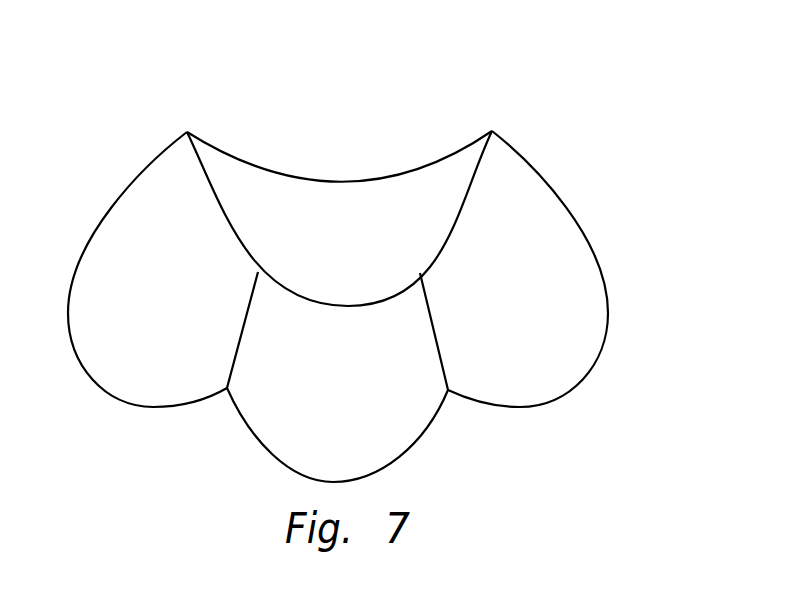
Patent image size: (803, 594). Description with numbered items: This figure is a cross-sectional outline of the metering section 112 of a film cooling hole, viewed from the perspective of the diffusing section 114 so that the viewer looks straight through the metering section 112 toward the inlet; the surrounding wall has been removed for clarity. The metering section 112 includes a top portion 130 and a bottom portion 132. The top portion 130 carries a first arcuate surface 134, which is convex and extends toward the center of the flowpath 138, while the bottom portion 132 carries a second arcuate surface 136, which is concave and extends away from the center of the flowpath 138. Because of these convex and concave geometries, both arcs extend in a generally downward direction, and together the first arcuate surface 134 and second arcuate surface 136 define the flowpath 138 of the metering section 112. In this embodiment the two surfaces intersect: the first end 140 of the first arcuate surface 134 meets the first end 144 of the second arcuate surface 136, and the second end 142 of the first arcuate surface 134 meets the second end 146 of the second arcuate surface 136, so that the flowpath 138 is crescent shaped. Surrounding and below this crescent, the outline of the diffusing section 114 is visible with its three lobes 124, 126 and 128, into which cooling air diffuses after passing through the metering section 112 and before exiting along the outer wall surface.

The metering section 112 is at (243, 187).
The diffusing section 114 is at (532, 207).
The lobe 124 is at (535, 364).
The lobe 126 is at (355, 427).
The lobe 128 is at (158, 354).
The top portion 130 is at (412, 166).
The bottom portion 132 is at (429, 271).
The first arcuate surface 134 is at (362, 180).
The second arcuate surface 136 is at (352, 303).
The flowpath 138 is at (320, 237).
The first end 140 is at (190, 133).
The second end 142 is at (490, 131).
The first end 144 is at (187, 140).
The second end 146 is at (489, 145).